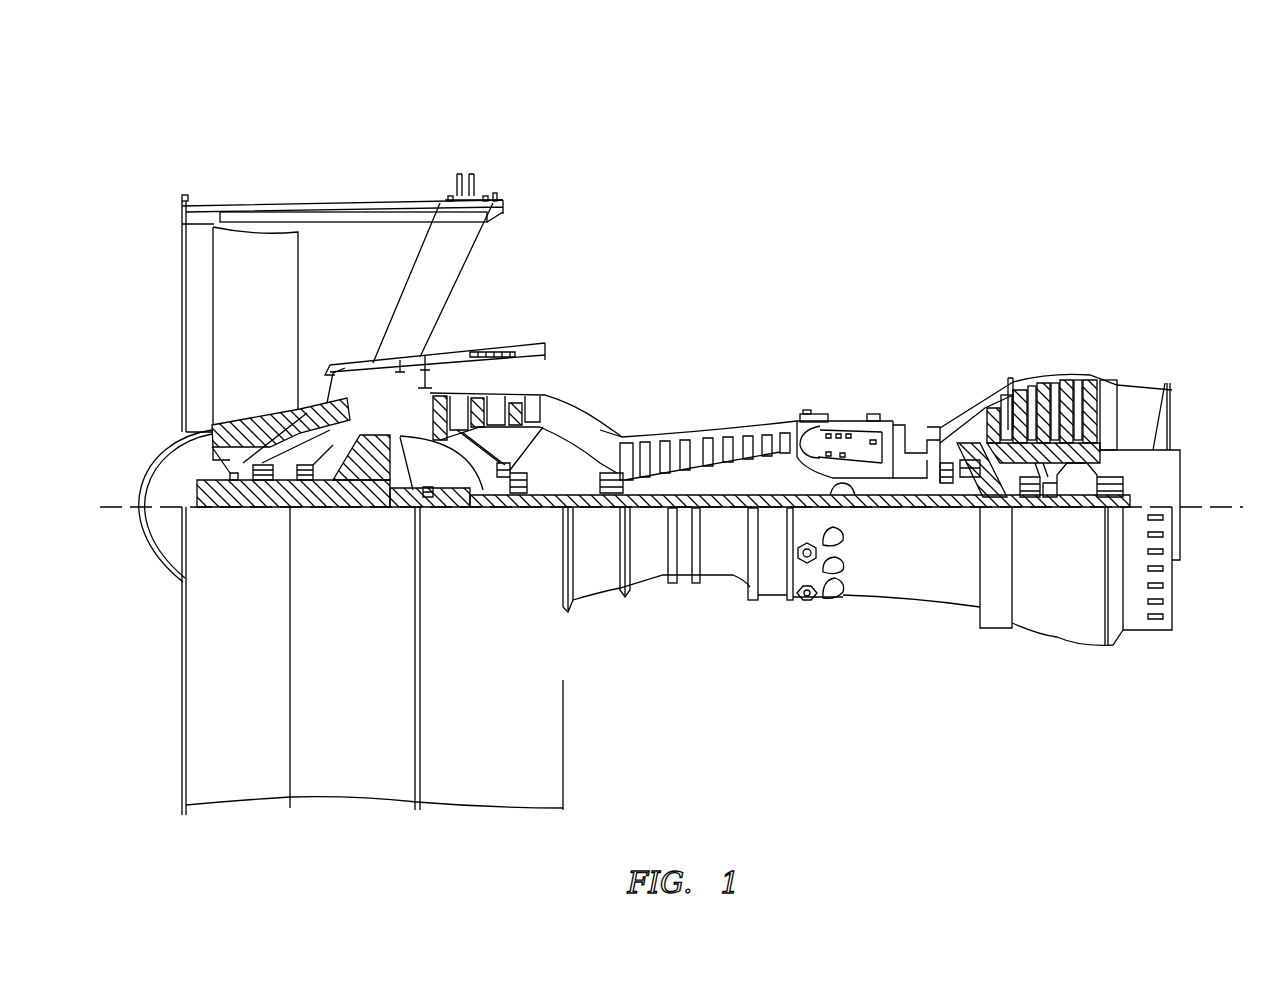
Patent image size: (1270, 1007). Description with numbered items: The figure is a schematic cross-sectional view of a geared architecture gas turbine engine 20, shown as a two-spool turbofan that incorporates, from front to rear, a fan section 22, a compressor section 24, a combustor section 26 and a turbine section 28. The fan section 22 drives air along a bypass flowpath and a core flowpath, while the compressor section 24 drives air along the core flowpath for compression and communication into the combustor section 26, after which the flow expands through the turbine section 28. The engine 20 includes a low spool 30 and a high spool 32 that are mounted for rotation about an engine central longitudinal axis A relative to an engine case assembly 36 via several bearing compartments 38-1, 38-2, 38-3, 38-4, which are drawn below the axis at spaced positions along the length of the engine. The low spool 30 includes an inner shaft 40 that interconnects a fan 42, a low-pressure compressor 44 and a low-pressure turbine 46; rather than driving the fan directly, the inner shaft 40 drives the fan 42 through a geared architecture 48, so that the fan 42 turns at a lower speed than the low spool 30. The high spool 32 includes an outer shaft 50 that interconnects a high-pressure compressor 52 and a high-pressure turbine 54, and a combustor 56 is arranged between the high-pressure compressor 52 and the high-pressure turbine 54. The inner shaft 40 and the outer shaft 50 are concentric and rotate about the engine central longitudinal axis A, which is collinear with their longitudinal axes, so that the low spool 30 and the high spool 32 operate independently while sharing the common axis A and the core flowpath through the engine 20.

The gas turbine engine 20 is at (952, 255).
The fan section 22 is at (175, 183).
The compressor section 24 is at (425, 313).
The combustor section 26 is at (797, 313).
The turbine section 28 is at (1113, 313).
The low spool 30 is at (730, 507).
The high spool 32 is at (767, 472).
The engine case assembly 36 is at (774, 599).
The bearing compartment 38-1 is at (235, 558).
The bearing compartment 38-2 is at (503, 620).
The bearing compartment 38-3 is at (975, 520).
The bearing compartment 38-4 is at (1115, 518).
The inner shaft 40 is at (587, 507).
The fan 42 is at (234, 340).
The low-pressure compressor 44 is at (493, 400).
The low-pressure turbine 46 is at (1047, 387).
The geared architecture 48 is at (377, 490).
The outer shaft 50 is at (843, 487).
The high-pressure compressor 52 is at (713, 473).
The high-pressure turbine 54 is at (917, 415).
The combustor 56 is at (848, 447).
The engine central longitudinal axis A is at (1230, 504).